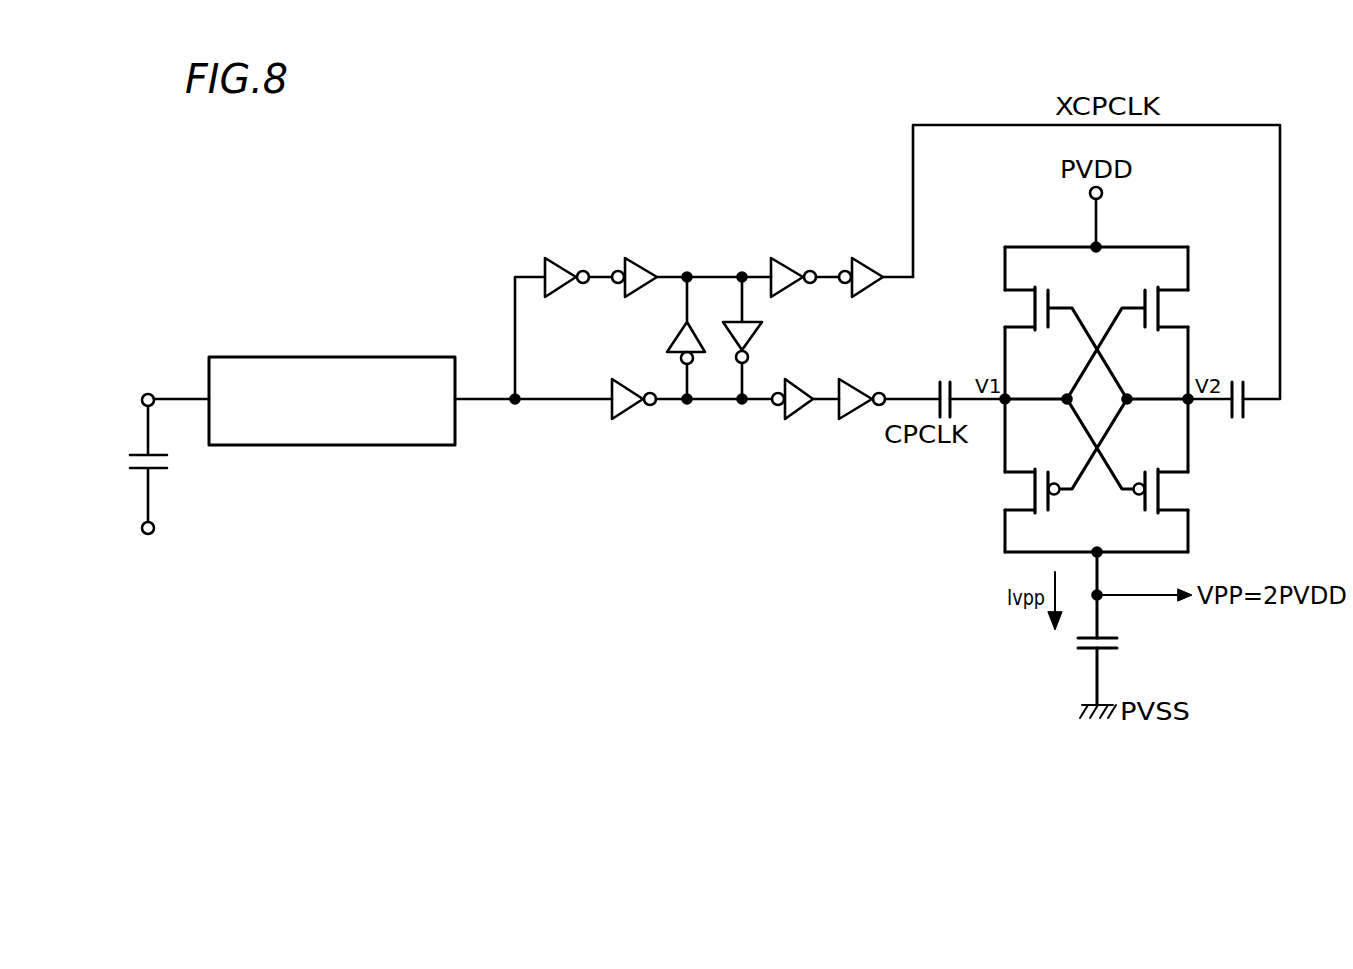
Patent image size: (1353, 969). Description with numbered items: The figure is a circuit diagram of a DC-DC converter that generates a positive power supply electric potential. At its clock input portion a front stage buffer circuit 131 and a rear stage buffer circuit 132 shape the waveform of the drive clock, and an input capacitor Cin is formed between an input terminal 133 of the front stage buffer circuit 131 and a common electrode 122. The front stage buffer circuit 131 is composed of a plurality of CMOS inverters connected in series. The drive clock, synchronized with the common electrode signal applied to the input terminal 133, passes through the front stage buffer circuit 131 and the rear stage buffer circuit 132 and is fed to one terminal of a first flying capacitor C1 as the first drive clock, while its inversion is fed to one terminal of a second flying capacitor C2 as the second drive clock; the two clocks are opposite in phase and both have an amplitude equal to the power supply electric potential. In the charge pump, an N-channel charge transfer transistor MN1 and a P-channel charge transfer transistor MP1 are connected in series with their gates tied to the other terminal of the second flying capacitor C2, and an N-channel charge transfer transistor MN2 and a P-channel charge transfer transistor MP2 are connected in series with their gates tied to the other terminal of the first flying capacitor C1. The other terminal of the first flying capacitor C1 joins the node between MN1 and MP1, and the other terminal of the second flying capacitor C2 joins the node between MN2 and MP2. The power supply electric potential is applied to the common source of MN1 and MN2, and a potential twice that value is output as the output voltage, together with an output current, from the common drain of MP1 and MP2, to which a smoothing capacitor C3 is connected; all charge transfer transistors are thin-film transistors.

The front stage buffer circuit 131 is at (378, 357).
The rear stage buffer circuit 132 is at (872, 455).
The input terminal 133 is at (142, 400).
The common electrode 122 is at (142, 528).
The input capacitor Cin is at (172, 457).
The first flying capacitor C1 is at (941, 378).
The second flying capacitor C2 is at (1237, 378).
The smoothing capacitor C3 is at (1125, 646).
The N-channel type charge transfer transistor MN1 is at (1002, 308).
The N-channel type charge transfer transistor MN2 is at (1190, 308).
The P-channel type charge transfer transistor MP1 is at (1000, 490).
The P-channel type charge transfer transistor MP2 is at (1190, 490).